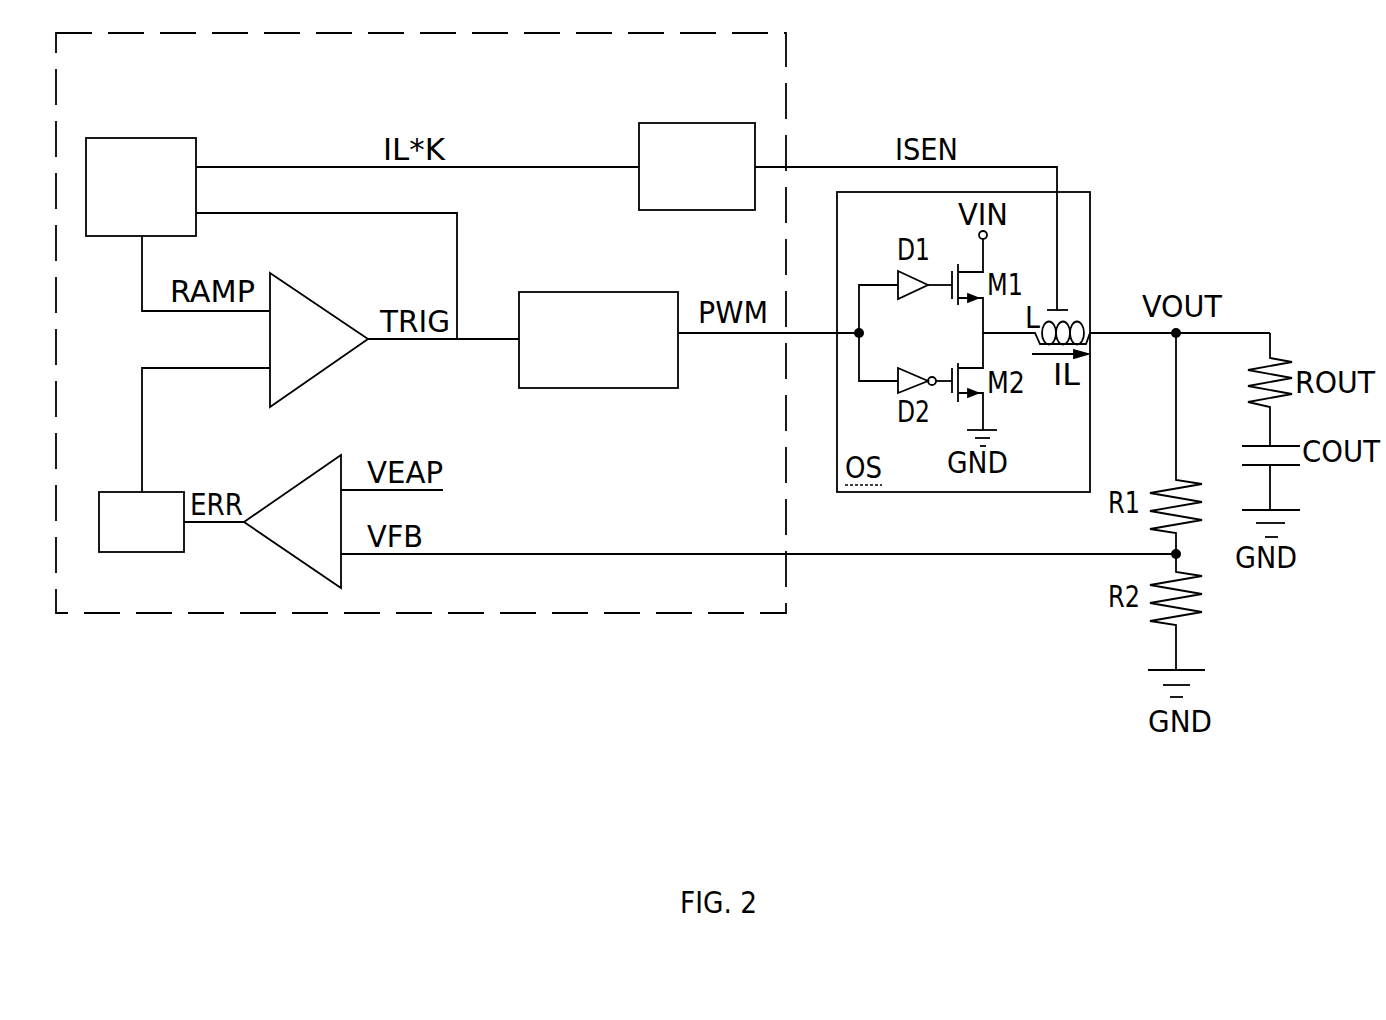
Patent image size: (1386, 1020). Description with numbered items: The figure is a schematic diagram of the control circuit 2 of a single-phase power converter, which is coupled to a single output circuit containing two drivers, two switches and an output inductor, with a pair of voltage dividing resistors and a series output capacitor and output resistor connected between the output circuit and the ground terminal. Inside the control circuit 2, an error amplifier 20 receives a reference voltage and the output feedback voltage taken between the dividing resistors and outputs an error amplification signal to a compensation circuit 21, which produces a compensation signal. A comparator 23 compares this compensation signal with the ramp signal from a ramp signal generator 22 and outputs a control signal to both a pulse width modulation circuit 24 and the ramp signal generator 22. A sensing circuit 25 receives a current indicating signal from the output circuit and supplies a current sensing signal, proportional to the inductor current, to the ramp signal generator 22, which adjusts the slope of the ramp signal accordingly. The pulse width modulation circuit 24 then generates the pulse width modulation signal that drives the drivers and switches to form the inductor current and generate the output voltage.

The control circuit 2 is at (99, 85).
The error amplifier 20 is at (318, 541).
The compensation circuit 21 is at (155, 540).
The ramp signal generator 22 is at (157, 201).
The comparator 23 is at (322, 358).
The pulse width modulation circuit 24 is at (614, 358).
The sensing circuit 25 is at (713, 183).